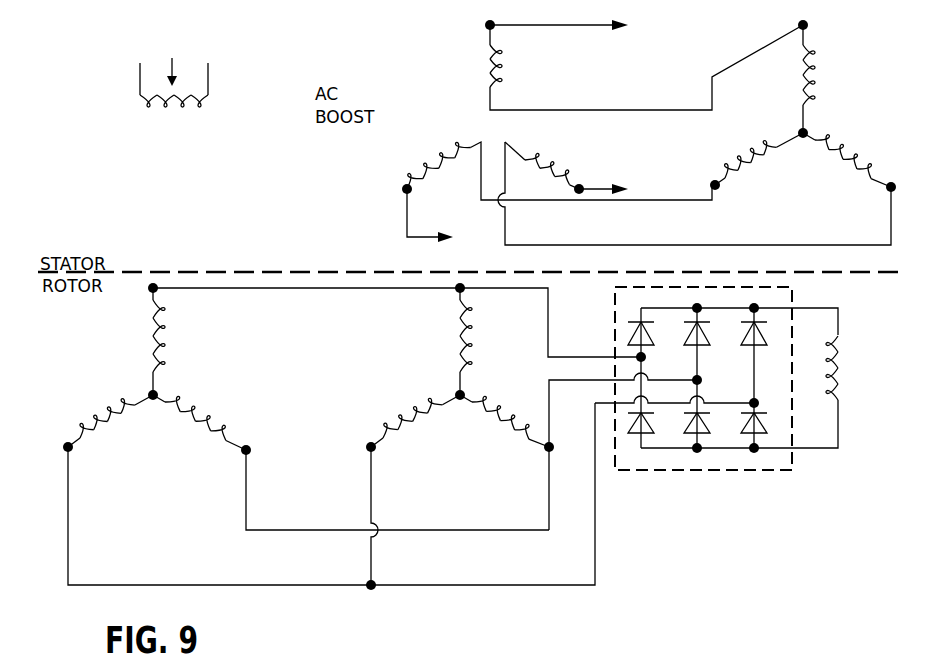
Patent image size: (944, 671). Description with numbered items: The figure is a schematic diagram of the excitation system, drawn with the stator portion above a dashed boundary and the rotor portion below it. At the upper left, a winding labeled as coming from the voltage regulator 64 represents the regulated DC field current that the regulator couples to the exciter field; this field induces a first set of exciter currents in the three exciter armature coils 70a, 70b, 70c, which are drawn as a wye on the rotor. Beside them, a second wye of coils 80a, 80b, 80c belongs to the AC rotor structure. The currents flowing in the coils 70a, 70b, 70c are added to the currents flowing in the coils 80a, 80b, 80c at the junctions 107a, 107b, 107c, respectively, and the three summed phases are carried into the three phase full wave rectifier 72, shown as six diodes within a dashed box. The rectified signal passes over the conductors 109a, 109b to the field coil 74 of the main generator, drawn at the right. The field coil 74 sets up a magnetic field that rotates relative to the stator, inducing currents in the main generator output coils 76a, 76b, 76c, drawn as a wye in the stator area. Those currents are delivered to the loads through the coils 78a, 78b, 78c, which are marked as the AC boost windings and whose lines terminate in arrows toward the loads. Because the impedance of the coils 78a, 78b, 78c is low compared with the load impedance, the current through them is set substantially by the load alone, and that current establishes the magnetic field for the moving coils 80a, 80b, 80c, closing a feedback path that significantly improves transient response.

The voltage regulator 64 is at (197, 62).
The exciter armature coil 70a is at (108, 412).
The exciter armature coil 70b is at (148, 332).
The exciter armature coil 70c is at (205, 420).
The three phase full wave rectifier 72 is at (738, 472).
The field coil 74 is at (847, 402).
The main generator output coil 76a is at (752, 160).
The main generator output coil 76b is at (814, 69).
The main generator output coil 76c is at (842, 170).
The coil 78a is at (446, 160).
The coil 78b is at (485, 66).
The coil 78c is at (543, 166).
The coil 80a is at (418, 398).
The coil 80b is at (455, 336).
The coil 80c is at (505, 425).
The junction 107a is at (545, 452).
The junction 107b is at (455, 292).
The junction 107c is at (372, 436).
The conductor 109a is at (812, 308).
The conductor 109b is at (822, 450).